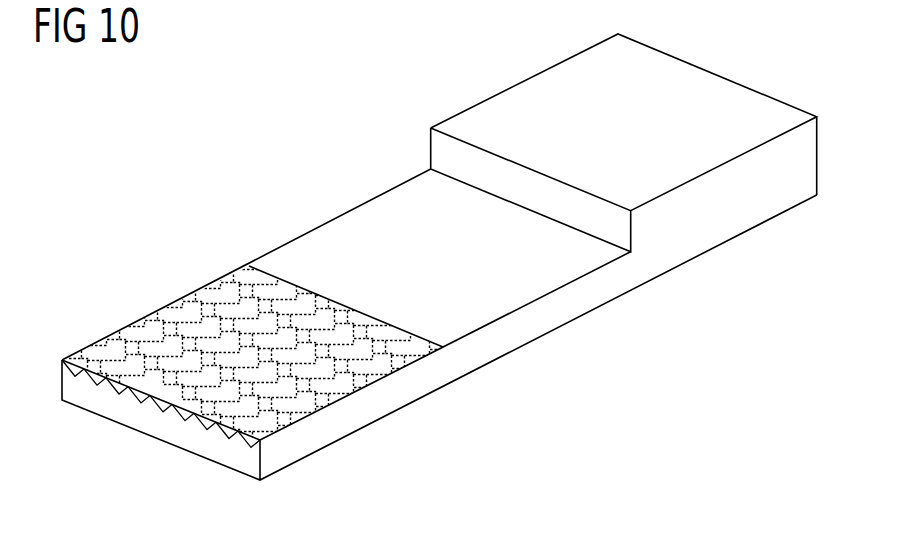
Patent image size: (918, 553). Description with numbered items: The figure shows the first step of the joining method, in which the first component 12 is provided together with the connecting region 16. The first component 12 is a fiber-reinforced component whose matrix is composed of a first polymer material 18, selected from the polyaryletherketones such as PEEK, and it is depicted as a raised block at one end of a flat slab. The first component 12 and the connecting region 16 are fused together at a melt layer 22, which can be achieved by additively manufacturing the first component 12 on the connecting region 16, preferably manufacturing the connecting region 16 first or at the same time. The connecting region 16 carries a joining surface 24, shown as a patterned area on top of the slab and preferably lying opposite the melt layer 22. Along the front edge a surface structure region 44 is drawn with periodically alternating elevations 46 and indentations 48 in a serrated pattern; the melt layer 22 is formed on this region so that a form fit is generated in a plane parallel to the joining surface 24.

The first component 12 is at (464, 88).
The connecting region 16 is at (191, 279).
The first polymer material 18 is at (362, 218).
The melt layer 22 is at (233, 440).
The joining surface 24 is at (162, 330).
The surface structure region 44 is at (103, 387).
The elevations 46 is at (145, 400).
The indentations 48 is at (157, 400).